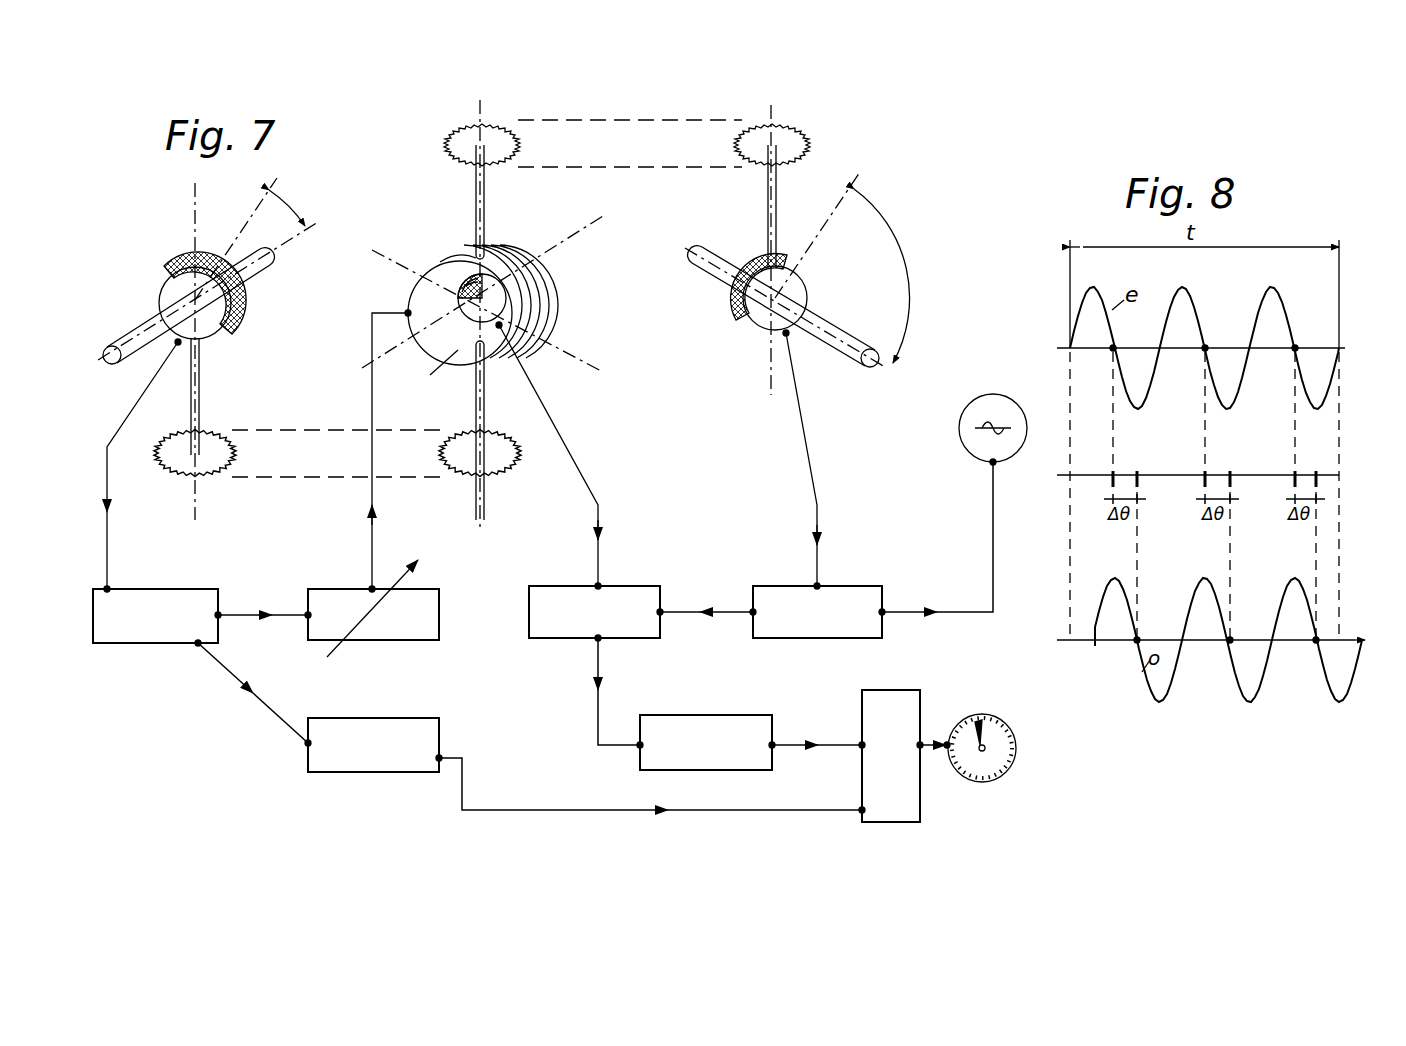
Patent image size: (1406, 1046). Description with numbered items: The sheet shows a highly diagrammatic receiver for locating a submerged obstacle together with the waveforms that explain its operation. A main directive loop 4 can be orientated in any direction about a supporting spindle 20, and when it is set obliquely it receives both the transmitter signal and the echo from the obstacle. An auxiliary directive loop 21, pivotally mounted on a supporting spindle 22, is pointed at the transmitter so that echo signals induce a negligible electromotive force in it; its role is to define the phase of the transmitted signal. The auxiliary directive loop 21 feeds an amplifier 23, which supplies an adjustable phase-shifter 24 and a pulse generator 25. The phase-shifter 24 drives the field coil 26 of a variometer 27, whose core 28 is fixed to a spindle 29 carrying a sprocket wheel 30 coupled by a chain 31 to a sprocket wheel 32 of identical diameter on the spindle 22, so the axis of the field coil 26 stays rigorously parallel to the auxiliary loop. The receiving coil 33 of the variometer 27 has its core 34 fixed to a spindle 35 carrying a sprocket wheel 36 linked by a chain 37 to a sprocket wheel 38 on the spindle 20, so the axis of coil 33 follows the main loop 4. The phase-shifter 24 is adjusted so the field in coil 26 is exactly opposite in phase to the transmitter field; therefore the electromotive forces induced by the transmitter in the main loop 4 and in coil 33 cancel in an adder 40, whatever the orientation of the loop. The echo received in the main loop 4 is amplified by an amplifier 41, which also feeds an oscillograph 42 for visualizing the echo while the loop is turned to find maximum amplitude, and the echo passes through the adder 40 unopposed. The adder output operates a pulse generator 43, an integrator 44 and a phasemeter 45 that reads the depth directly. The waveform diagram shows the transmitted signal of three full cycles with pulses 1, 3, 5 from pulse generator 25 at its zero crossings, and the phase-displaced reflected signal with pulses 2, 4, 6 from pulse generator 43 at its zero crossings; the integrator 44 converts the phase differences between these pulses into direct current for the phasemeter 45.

In FIG. 7, the main directive loop 4 is at (760, 268).
In FIG. 8, the main directive loop 4 is at (1231, 472).
In FIG. 7, the supporting spindle 20 is at (778, 210).
In FIG. 7, the auxiliary directive loop 21 is at (196, 275).
In FIG. 7, the supporting spindle 22 is at (200, 391).
In FIG. 7, the amplifier 23 is at (160, 596).
In FIG. 7, the adjustable phase-shifter 24 is at (334, 595).
In FIG. 7, the pulse generator 25 is at (370, 728).
In FIG. 7, the field coil 26 is at (472, 265).
In FIG. 7, the variometer 27 is at (532, 226).
In FIG. 7, the core 28 is at (428, 374).
In FIG. 7, the spindle 29 is at (484, 406).
In FIG. 7, the sprocket wheel 30 is at (514, 466).
In FIG. 7, the chain 31 is at (277, 431).
In FIG. 7, the sprocket wheel 32 is at (190, 474).
In FIG. 7, the receiving coil 33 is at (434, 283).
In FIG. 7, the core 34 is at (473, 314).
In FIG. 7, the spindle 35 is at (477, 214).
In FIG. 7, the sprocket wheel 36 is at (462, 148).
In FIG. 7, the chain 37 is at (630, 168).
In FIG. 7, the sprocket wheel 38 is at (796, 140).
In FIG. 7, the adder 40 is at (622, 594).
In FIG. 7, the amplifier 41 is at (842, 594).
In FIG. 7, the oscillograph 42 is at (985, 398).
In FIG. 7, the pulse generator 43 is at (700, 724).
In FIG. 7, the integrator 44 is at (895, 704).
In FIG. 7, the phasemeter 45 is at (994, 748).
In FIG. 8, the pulse 1 is at (1112, 472).
In FIG. 8, the pulse 2 is at (1138, 472).
In FIG. 8, the pulse 3 is at (1204, 472).
In FIG. 8, the pulse 5 is at (1294, 472).
In FIG. 8, the pulse 6 is at (1316, 472).